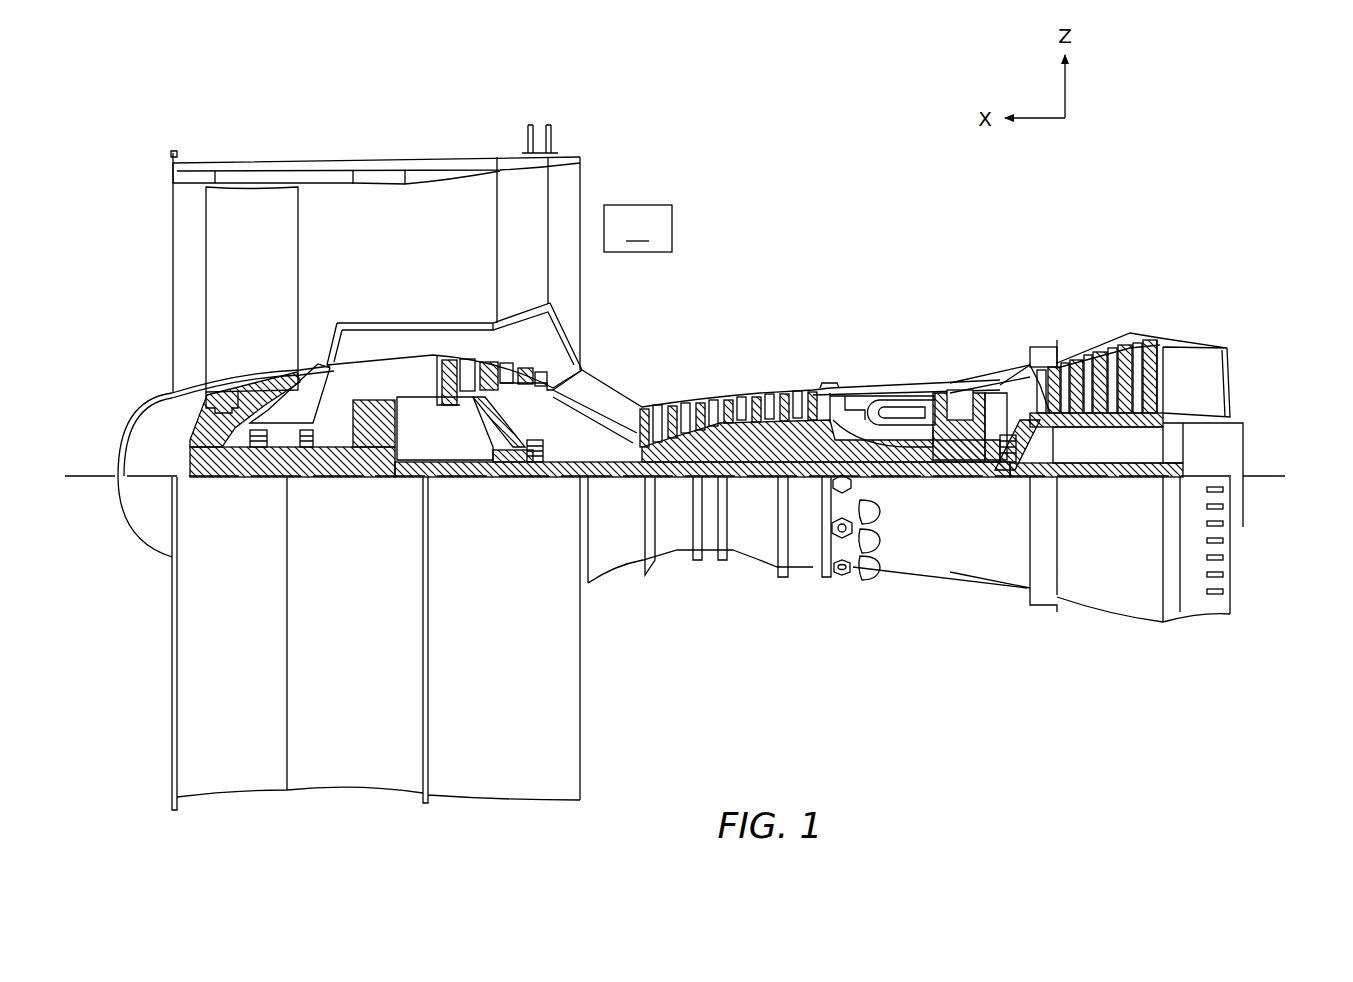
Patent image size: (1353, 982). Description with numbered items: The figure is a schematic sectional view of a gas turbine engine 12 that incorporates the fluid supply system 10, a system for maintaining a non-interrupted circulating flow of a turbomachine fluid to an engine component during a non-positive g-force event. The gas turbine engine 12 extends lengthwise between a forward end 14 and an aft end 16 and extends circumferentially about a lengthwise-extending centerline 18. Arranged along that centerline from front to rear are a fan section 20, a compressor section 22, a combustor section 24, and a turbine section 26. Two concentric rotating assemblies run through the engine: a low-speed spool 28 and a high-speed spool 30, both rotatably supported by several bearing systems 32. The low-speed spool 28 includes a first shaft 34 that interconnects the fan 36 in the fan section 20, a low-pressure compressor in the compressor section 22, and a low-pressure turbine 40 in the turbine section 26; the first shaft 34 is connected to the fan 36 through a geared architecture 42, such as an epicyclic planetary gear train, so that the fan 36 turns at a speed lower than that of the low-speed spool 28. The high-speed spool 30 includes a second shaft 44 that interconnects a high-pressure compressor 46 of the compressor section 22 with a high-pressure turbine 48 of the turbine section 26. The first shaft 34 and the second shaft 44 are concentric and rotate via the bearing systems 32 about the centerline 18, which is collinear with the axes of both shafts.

The fluid supply system 10 is at (413, 303).
The gas turbine engine 12 is at (957, 258).
The forward end 14 is at (132, 348).
The aft end 16 is at (1280, 355).
The centerline 18 is at (1270, 468).
The fan section 20 is at (300, 152).
The compressor section 22 is at (633, 365).
The combustor section 24 is at (889, 362).
The turbine section 26 is at (1046, 322).
The low-speed spool 28 is at (765, 477).
The high-speed spool 30 is at (807, 410).
The bearing systems 32 is at (530, 472).
The first shaft 34 is at (597, 477).
The fan 36 is at (233, 298).
The low-pressure turbine 40 is at (1103, 355).
The geared architecture 42 is at (382, 460).
The second shaft 44 is at (592, 420).
The high-pressure compressor 46 is at (740, 440).
The high-pressure turbine 48 is at (960, 385).